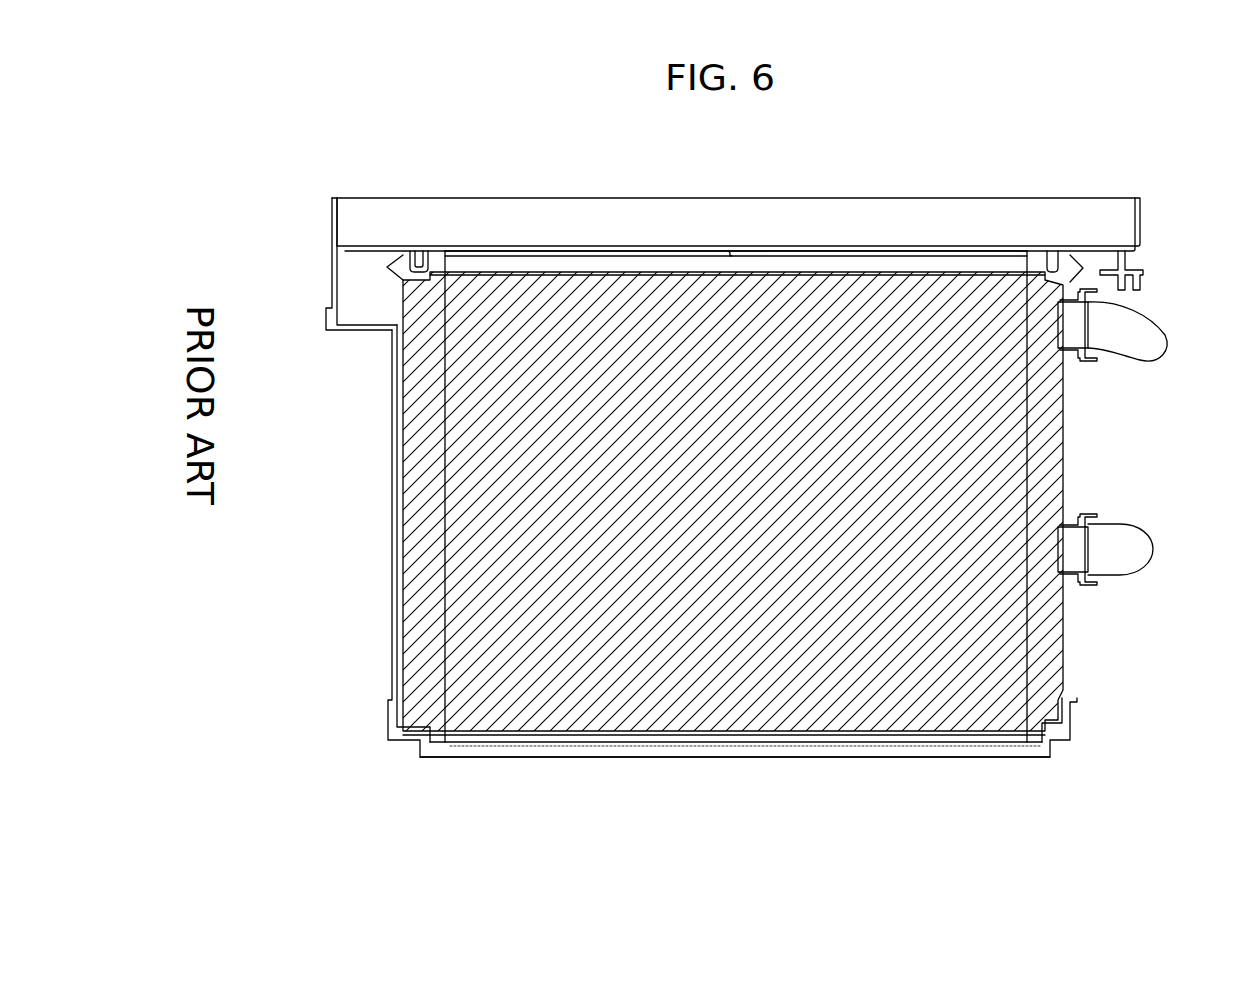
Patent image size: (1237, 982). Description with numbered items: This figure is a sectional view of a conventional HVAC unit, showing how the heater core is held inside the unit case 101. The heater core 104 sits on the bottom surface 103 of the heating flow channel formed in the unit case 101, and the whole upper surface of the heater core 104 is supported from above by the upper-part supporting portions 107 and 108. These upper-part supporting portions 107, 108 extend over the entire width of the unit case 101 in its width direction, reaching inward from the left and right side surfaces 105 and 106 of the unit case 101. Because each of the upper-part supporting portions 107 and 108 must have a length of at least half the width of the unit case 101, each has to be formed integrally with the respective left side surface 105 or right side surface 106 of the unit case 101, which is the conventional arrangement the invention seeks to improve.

The unit case 101 is at (392, 523).
The bottom surface 103 is at (661, 750).
The heater core 104 is at (773, 690).
The left side surface 105 is at (332, 272).
The right side surface 106 is at (1142, 212).
The upper-part supporting portion 107 is at (548, 247).
The upper-part supporting portion 108 is at (872, 247).